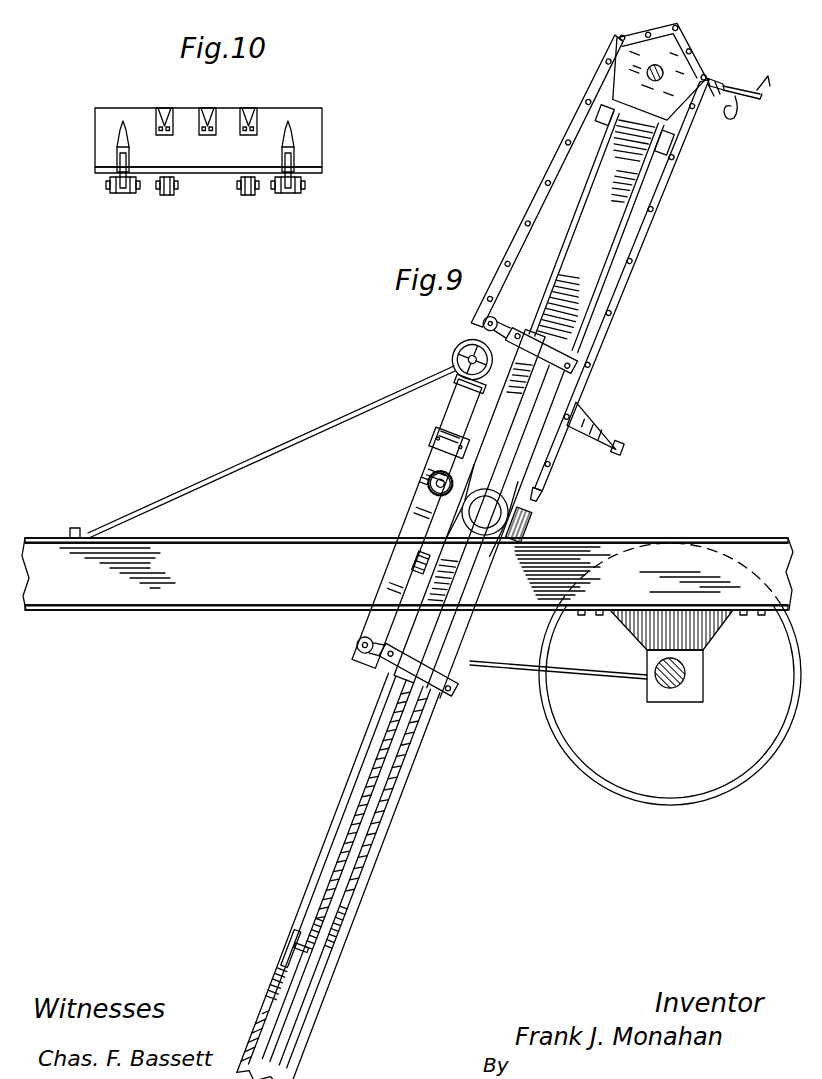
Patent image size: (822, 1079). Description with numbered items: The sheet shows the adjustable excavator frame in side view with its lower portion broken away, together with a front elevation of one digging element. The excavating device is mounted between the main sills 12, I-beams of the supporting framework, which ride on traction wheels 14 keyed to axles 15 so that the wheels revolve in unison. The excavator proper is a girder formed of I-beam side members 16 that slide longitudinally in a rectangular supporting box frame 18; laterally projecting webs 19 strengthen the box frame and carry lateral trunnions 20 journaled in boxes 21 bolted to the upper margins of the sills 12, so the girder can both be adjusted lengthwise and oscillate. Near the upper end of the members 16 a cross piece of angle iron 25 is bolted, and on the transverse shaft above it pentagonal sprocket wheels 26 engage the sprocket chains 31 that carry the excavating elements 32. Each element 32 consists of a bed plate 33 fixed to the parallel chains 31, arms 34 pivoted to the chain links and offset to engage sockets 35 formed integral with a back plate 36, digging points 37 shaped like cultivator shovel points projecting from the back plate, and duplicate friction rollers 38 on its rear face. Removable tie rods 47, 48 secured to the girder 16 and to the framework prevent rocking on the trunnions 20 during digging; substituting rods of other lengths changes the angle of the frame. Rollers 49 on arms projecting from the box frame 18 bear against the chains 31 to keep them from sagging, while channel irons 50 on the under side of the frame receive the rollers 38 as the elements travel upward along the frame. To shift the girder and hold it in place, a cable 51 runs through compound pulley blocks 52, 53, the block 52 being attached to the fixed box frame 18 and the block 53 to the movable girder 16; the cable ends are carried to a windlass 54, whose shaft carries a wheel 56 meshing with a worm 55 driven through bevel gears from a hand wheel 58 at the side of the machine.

In FIG. 9, the main sills 12 is at (300, 552).
In FIG. 9, the wheel 14 is at (565, 738).
In FIG. 9, the axles 15 is at (686, 670).
In FIG. 9, the side members 16 is at (380, 865).
In FIG. 9, the supporting box frame 18 is at (492, 408).
In FIG. 9, the laterally projecting webs 19 is at (496, 385).
In FIG. 9, the lateral trunnions 20 is at (492, 508).
In FIG. 9, the boxes 21 is at (534, 518).
In FIG. 9, the cross piece of angle iron 25 is at (605, 135).
In FIG. 9, the pentagonal sprocket wheels 26 is at (684, 70).
In FIG. 9, the sprocket chains 31 is at (638, 254).
In FIG. 9, the excavating elements 32 is at (604, 446).
In FIG. 10, the bed-plate 33 is at (219, 173).
In FIG. 9, the bed-plate 33 is at (713, 97).
In FIG. 10, the arms 34 is at (124, 194).
In FIG. 9, the arms 34 is at (723, 80).
In FIG. 10, the sockets 35 is at (133, 155).
In FIG. 10, the back plate 36 is at (312, 126).
In FIG. 10, the digging points 37 is at (243, 108).
In FIG. 9, the digging points 37 is at (758, 86).
In FIG. 10, the friction rollers 38 is at (240, 197).
In FIG. 9, the friction rollers 38 is at (731, 118).
In FIG. 9, the tie rod 47 is at (344, 419).
In FIG. 9, the tie rod 48 is at (520, 669).
In FIG. 9, the rollers 49 is at (495, 321).
In FIG. 9, the channel irons 50 is at (532, 496).
In FIG. 9, the cable 51 is at (380, 802).
In FIG. 9, the compound pulley block 52 is at (448, 575).
In FIG. 9, the compound pulley block 53 is at (290, 952).
In FIG. 9, the windlass 54 is at (452, 472).
In FIG. 9, the worm 55 is at (424, 478).
In FIG. 9, the wheel 56 is at (436, 490).
In FIG. 9, the hand wheel 58 is at (462, 350).